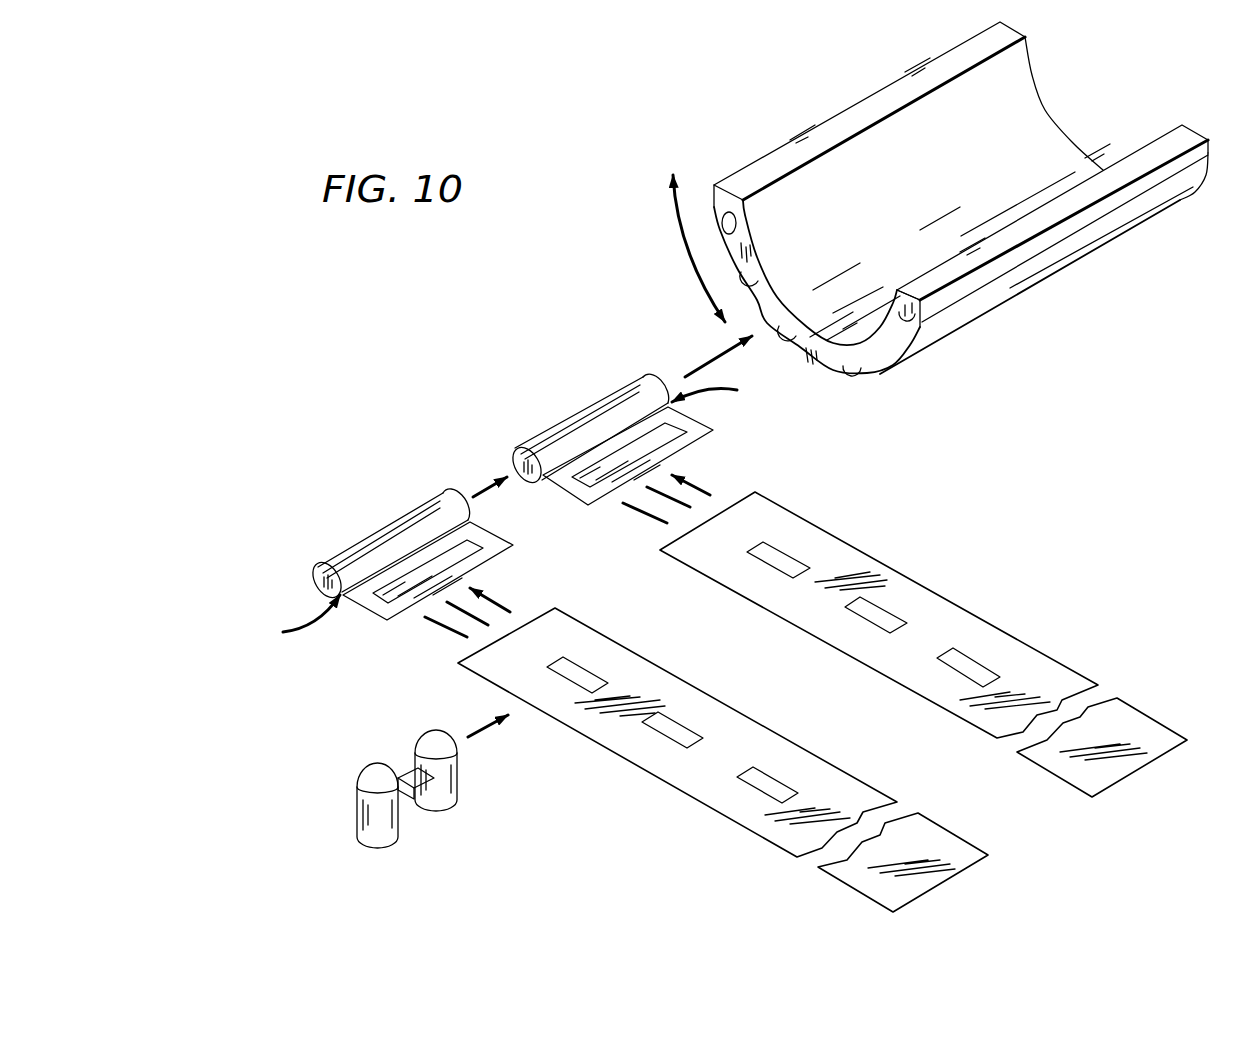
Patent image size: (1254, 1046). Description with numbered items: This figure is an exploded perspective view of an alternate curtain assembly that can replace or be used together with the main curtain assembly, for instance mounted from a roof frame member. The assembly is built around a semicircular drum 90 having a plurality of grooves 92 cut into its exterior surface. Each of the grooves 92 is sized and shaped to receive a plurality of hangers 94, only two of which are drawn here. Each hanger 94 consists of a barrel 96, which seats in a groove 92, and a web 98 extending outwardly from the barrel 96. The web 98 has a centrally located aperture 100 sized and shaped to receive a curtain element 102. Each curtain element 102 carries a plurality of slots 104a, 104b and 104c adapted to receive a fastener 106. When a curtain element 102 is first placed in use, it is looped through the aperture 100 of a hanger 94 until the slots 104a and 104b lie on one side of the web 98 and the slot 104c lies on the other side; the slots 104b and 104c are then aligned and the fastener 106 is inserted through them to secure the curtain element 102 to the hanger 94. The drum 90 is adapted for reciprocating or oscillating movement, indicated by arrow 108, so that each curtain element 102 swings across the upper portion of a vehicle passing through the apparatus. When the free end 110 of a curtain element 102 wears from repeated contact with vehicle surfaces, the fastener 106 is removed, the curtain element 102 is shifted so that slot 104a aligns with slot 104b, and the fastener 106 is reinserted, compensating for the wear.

The semicircular drum 90 is at (1039, 96).
The grooves 92 is at (735, 231).
The hangers 94 is at (511, 512).
The barrel 96 is at (573, 423).
The web 98 is at (597, 492).
The aperture 100 is at (653, 440).
The curtain element 102 is at (653, 777).
The slot 104a is at (777, 562).
The slot 104b is at (870, 612).
The slot 104c is at (965, 670).
The fastener 106 is at (360, 837).
The arrow 108 is at (687, 250).
The free end 110 is at (1145, 765).